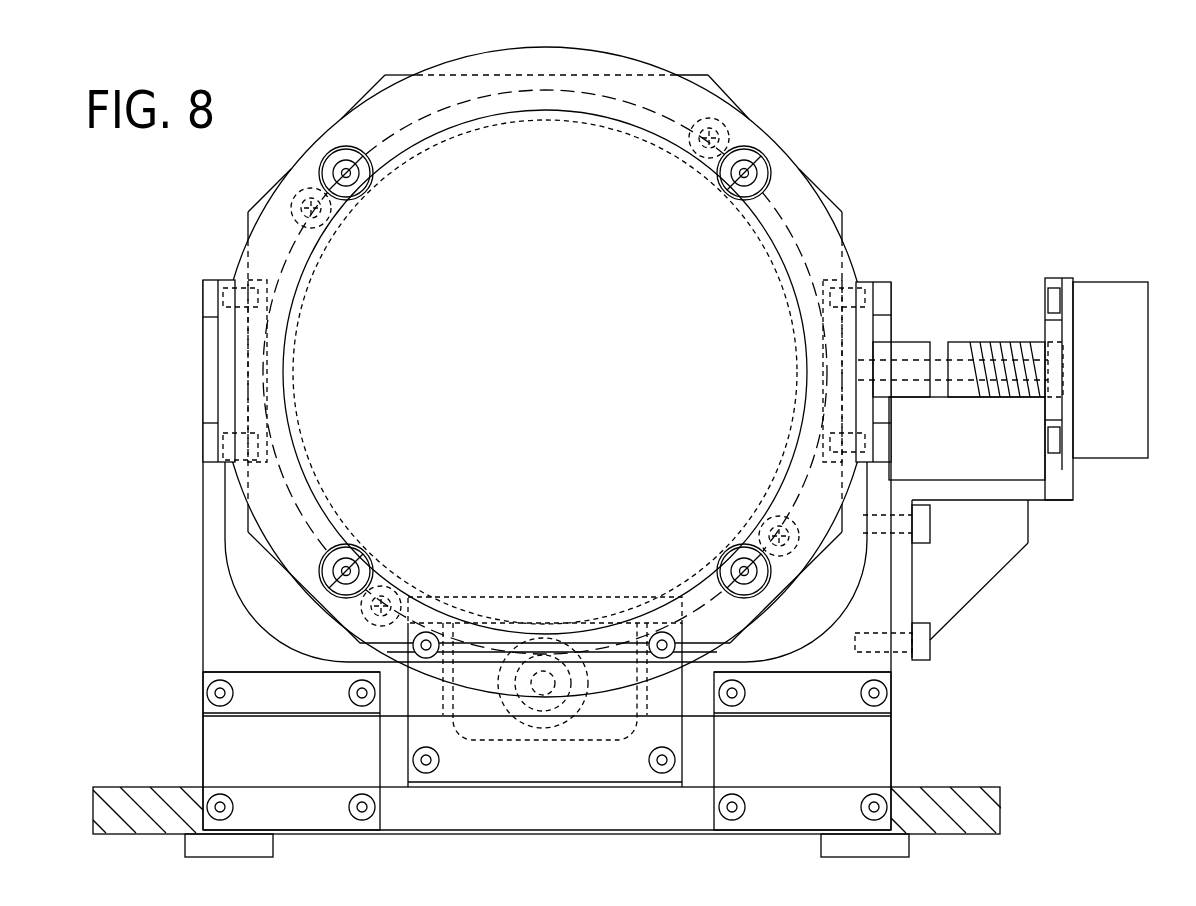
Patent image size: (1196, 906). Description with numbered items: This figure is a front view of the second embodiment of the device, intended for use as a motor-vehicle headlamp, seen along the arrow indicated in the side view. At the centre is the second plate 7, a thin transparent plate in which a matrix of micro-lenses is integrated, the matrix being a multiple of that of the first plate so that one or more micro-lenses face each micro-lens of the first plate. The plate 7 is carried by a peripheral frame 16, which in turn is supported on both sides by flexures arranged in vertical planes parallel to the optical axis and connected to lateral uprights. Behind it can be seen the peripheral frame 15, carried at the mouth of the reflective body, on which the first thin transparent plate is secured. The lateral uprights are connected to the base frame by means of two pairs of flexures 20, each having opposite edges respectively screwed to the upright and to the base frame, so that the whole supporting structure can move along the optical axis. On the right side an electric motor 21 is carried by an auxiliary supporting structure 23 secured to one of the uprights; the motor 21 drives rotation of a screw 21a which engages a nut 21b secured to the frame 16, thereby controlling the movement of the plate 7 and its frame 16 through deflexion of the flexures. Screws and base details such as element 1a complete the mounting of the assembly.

The second plate 7 is at (430, 187).
The peripheral frame 15 is at (708, 80).
The peripheral frame 16 is at (662, 88).
The flexures 20 is at (298, 758).
The electric motor 21 is at (1097, 288).
The screw 21a is at (1000, 342).
The nut 21b is at (920, 342).
The auxiliary supporting structure 23 is at (610, 673).
The base 1a is at (962, 790).